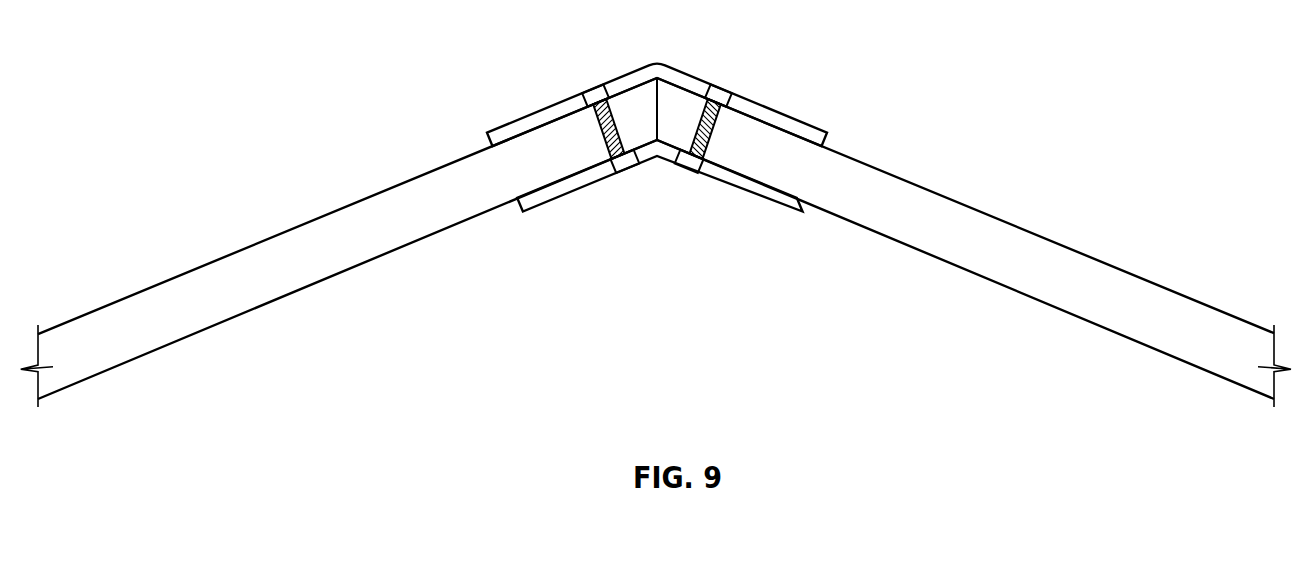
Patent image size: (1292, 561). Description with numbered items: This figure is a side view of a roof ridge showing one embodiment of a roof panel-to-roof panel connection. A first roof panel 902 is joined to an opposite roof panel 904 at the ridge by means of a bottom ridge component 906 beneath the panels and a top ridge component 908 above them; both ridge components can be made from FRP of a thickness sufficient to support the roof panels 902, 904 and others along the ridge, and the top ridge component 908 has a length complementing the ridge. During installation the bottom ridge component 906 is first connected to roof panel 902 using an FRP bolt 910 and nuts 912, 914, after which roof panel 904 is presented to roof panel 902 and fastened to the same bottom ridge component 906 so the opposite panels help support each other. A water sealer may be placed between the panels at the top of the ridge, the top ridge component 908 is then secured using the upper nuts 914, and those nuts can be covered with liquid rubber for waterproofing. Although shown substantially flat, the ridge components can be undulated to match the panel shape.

The roof panel 902 is at (264, 241).
The roof panel 904 is at (1007, 221).
The bottom ridge component 906 is at (519, 210).
The top ridge component 908 is at (813, 124).
The FRP bolt 910 is at (619, 104).
The nut 912 is at (626, 164).
The upper nut 914 is at (588, 90).